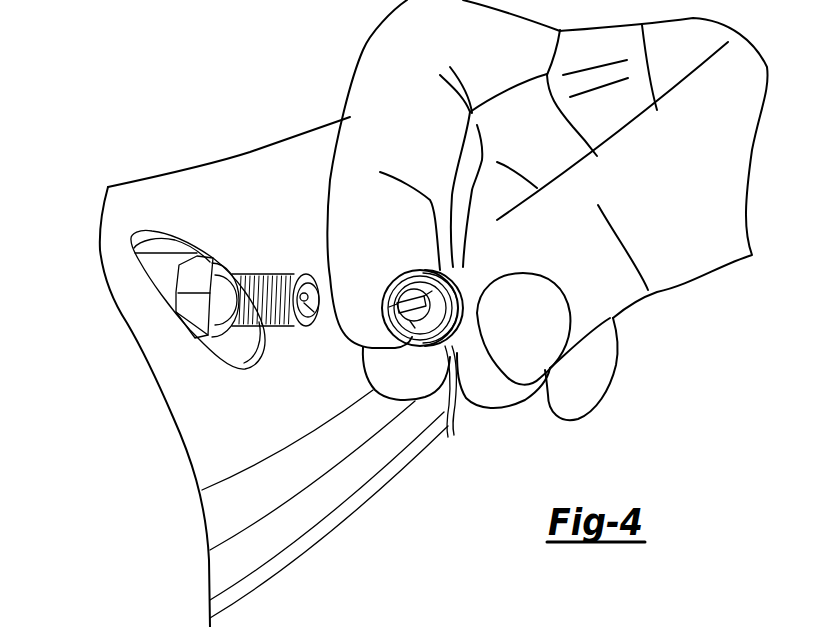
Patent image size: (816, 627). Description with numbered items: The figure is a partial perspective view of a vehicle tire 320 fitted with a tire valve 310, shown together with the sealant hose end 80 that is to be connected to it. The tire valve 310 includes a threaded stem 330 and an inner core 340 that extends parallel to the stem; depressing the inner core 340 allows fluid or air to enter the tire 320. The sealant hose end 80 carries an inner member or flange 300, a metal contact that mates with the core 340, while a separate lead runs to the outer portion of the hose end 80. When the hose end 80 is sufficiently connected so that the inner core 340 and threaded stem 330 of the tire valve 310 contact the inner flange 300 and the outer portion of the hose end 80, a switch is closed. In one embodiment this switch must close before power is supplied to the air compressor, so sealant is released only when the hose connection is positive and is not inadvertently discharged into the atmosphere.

The sealant hose end 80 is at (448, 424).
The inner member or flange 300 is at (385, 293).
The tire valve 310 is at (236, 253).
The vehicle tire 320 is at (180, 403).
The threaded stem 330 is at (284, 275).
The inner core 340 is at (307, 327).